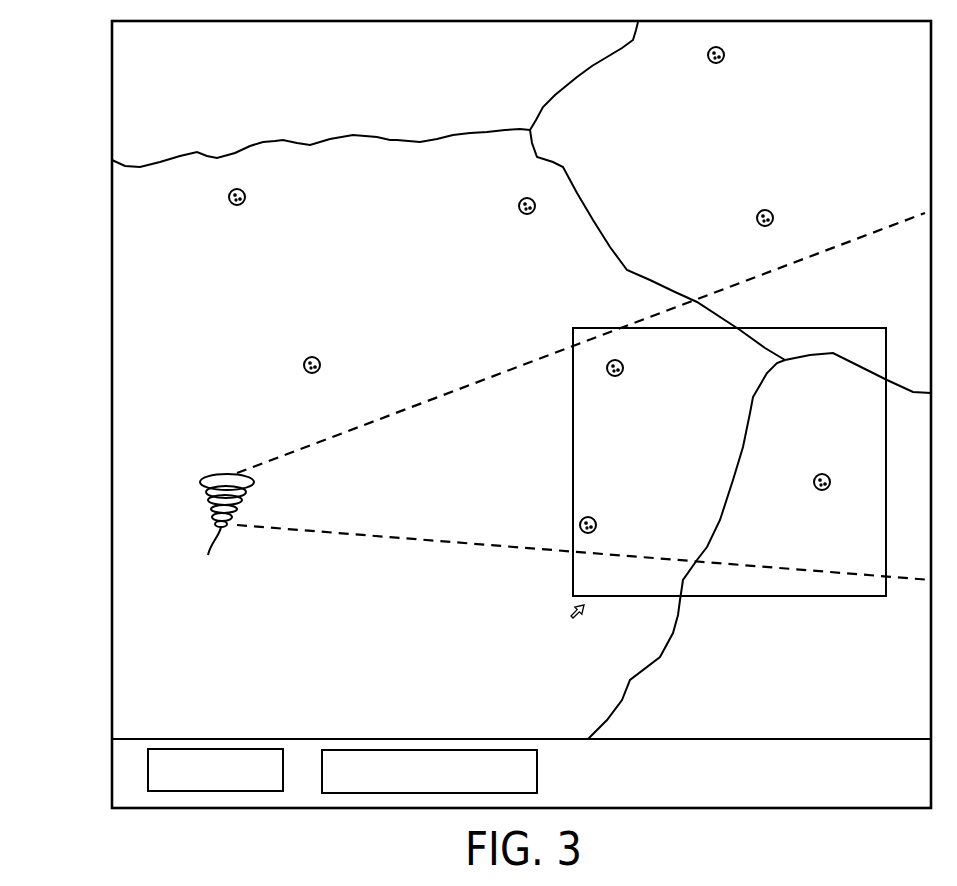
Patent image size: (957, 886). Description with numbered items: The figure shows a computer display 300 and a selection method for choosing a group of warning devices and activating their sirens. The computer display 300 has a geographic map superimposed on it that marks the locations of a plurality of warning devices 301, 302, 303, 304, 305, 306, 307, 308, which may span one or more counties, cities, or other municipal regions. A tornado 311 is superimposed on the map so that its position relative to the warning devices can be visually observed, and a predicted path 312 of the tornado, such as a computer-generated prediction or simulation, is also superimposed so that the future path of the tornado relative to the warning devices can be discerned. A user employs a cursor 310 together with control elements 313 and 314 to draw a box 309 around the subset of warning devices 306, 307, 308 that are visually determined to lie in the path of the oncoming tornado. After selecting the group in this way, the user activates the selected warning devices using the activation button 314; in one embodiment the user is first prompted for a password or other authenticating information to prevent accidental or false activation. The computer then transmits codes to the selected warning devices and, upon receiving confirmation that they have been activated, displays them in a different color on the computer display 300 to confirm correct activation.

The computer display 300 is at (112, 437).
The warning device 301 is at (238, 206).
The warning device 302 is at (308, 356).
The warning device 303 is at (527, 196).
The warning device 304 is at (718, 64).
The warning device 305 is at (760, 210).
The warning device 306 is at (617, 377).
The warning device 307 is at (590, 513).
The warning device 308 is at (824, 491).
The box 309 is at (573, 485).
The cursor 310 is at (572, 617).
The tornado 311 is at (220, 532).
The predicted path 312 is at (318, 533).
The control element 313 is at (200, 791).
The activation button 314 is at (338, 791).